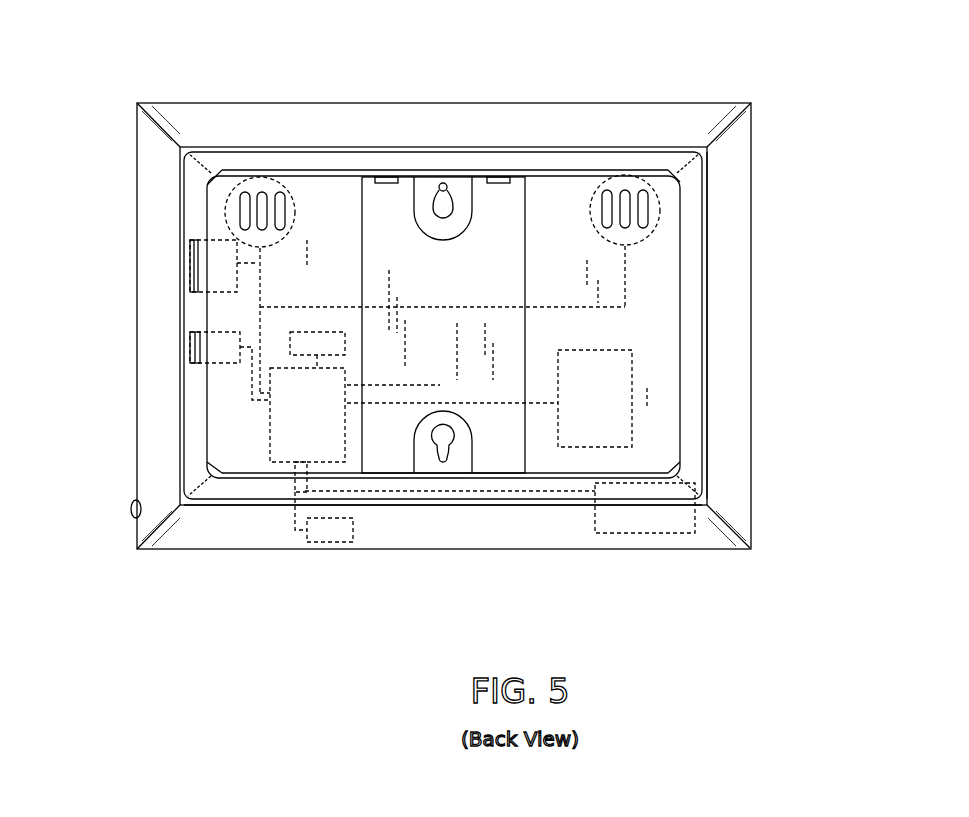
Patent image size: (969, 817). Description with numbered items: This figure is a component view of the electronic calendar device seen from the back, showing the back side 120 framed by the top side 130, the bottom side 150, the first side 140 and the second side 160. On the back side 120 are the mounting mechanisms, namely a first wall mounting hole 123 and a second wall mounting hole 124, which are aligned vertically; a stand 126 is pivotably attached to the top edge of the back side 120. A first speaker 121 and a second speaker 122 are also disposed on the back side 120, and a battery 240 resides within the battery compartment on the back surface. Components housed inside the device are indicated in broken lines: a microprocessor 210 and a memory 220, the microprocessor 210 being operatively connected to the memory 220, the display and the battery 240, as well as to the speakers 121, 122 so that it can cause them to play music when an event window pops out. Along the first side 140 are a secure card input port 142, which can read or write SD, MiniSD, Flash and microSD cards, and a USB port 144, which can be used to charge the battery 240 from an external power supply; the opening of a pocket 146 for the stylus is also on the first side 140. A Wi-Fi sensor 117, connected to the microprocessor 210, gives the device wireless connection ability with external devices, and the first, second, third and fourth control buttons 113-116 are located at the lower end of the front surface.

The first, second, third and fourth control buttons 113-116 is at (643, 520).
The Wi-Fi sensor 117 is at (325, 535).
The back side 120 is at (637, 322).
The first speaker 121 is at (237, 190).
The second speaker 122 is at (627, 180).
The first wall mounting hole 123 is at (443, 183).
The second wall mounting hole 124 is at (440, 462).
The stand 126 is at (498, 460).
The top side 130 is at (526, 120).
The first side 140 is at (157, 306).
The secure card input port 142 is at (190, 273).
The USB port 144 is at (203, 362).
The pocket 146 is at (128, 513).
The bottom side 150 is at (482, 522).
The second side 160 is at (725, 260).
The microprocessor 210 is at (283, 427).
The memory 220 is at (320, 332).
The battery 240 is at (627, 385).